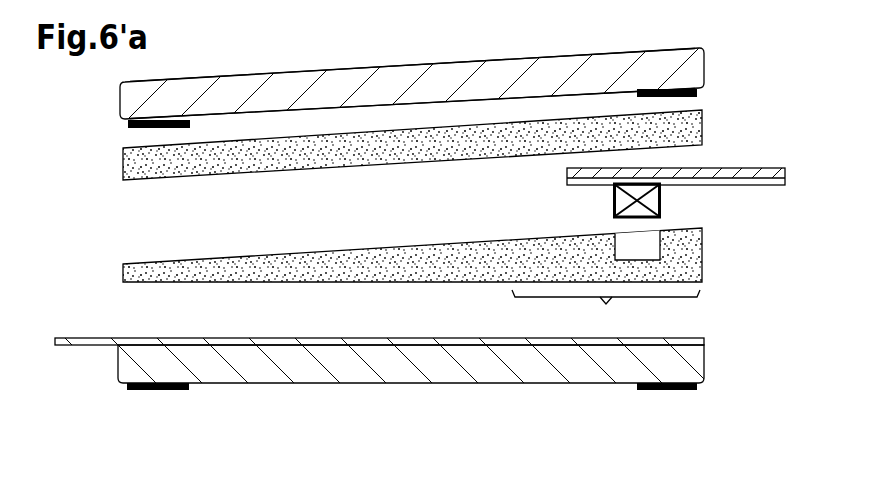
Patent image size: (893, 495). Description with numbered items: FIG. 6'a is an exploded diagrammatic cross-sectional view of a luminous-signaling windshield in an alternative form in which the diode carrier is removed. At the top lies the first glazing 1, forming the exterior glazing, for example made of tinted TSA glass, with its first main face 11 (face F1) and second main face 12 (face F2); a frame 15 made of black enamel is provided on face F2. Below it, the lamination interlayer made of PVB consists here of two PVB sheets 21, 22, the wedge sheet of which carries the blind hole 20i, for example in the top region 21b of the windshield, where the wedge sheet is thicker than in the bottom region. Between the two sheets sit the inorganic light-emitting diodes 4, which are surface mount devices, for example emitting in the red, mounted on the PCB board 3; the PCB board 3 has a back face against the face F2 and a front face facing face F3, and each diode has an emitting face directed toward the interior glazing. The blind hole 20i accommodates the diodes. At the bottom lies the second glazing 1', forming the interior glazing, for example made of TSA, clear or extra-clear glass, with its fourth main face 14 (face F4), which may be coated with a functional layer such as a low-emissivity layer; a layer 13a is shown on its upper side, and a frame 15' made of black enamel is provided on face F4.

The first glazing 1 is at (442, 65).
The first main face 11 is at (423, 64).
The second main face 12 is at (446, 105).
The frame 15 is at (116, 132).
The PVB sheet 21 is at (123, 165).
The PVB sheet 22 is at (123, 277).
The blind hole 20i is at (647, 243).
The top region 21b is at (606, 312).
The PCB board 3 is at (774, 167).
The inorganic light-emitting diodes 4 is at (615, 197).
The coating layer 13a is at (700, 340).
The second glazing 1' is at (411, 380).
The fourth main face 14 is at (490, 384).
The frame 15' is at (116, 399).